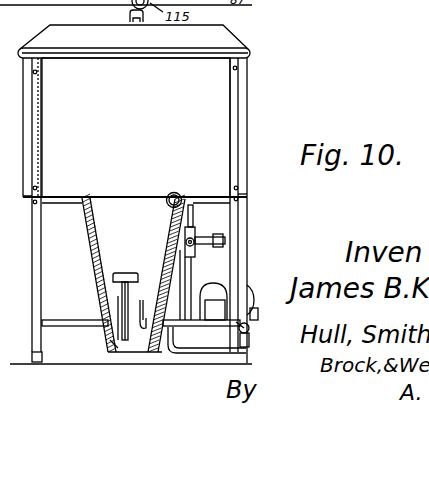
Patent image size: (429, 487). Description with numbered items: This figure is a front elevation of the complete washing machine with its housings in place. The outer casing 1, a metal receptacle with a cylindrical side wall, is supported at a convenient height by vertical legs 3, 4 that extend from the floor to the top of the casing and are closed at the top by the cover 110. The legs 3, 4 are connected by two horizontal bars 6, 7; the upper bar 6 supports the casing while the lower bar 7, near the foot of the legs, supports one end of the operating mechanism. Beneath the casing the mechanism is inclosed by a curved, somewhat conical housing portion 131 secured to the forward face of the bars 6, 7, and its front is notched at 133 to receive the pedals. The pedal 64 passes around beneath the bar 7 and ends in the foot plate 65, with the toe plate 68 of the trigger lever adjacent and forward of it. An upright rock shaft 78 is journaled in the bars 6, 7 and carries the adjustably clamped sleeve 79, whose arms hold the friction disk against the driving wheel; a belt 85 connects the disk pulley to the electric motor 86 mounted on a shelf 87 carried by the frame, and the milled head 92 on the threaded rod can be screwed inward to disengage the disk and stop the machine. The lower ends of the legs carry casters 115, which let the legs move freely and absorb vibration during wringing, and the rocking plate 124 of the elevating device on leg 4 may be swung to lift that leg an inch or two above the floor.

The outer casing 1 is at (135, 127).
The leg 3 is at (38, 150).
The leg 4 is at (230, 150).
The horizontal bar 6 is at (58, 203).
The horizontal bar 7 is at (62, 326).
The pedal 64 is at (118, 298).
The foot plate 65 is at (128, 273).
The toe plate 68 is at (147, 307).
The rock shaft 78 is at (193, 274).
The sleeve 79 is at (195, 233).
The belt 85 is at (179, 285).
The electric motor 86 is at (249, 294).
The shelf 87 is at (203, 354).
The milled head 92 is at (171, 189).
The cover 110 is at (233, 40).
The casters 115 is at (32, 357).
The rocking plate 124 is at (250, 336).
The conical housing portion 131 is at (133, 273).
The notch 133 is at (118, 348).